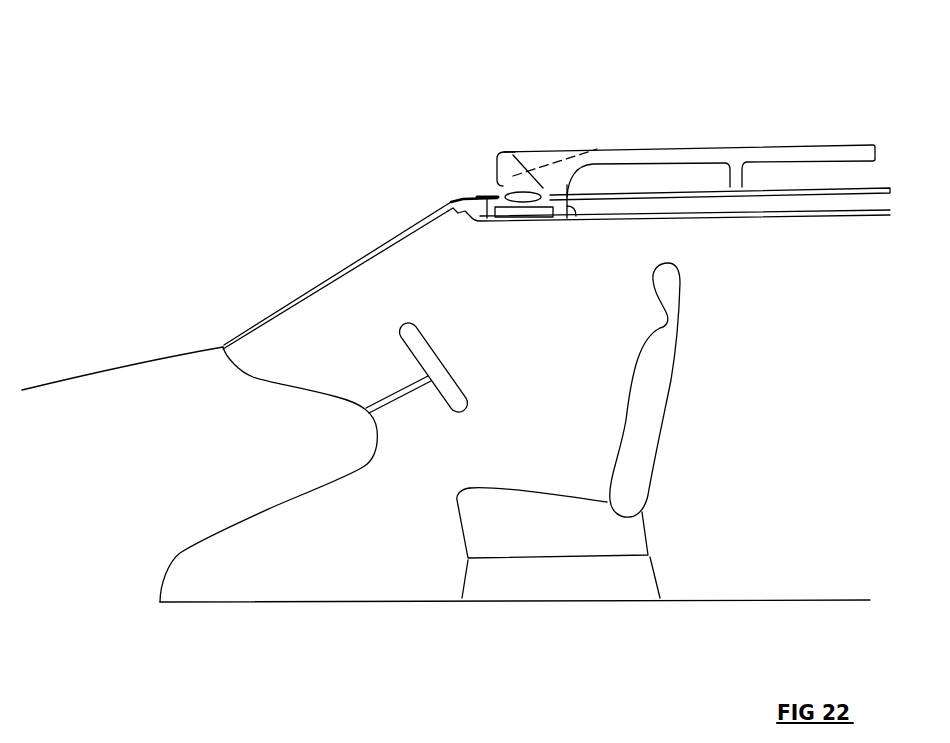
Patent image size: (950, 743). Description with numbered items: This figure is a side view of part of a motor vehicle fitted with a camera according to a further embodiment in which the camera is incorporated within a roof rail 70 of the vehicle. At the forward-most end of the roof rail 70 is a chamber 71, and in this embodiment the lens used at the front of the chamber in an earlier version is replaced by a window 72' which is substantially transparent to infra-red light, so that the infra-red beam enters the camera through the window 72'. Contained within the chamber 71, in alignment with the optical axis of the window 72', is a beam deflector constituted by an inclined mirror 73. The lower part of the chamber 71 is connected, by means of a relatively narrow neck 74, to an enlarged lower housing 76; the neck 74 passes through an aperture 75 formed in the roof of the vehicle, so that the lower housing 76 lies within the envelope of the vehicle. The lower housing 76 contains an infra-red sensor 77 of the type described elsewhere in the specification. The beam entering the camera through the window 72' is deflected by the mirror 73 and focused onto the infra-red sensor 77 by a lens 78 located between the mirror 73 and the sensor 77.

The roof rail 70 is at (675, 146).
The chamber 71 is at (515, 140).
The window 72' is at (495, 132).
The inclined mirror 73 is at (548, 187).
The neck 74 is at (487, 193).
The aperture 75 is at (613, 197).
The lower housing 76 is at (572, 209).
The infra-red sensor 77 is at (510, 218).
The lens 78 is at (472, 221).